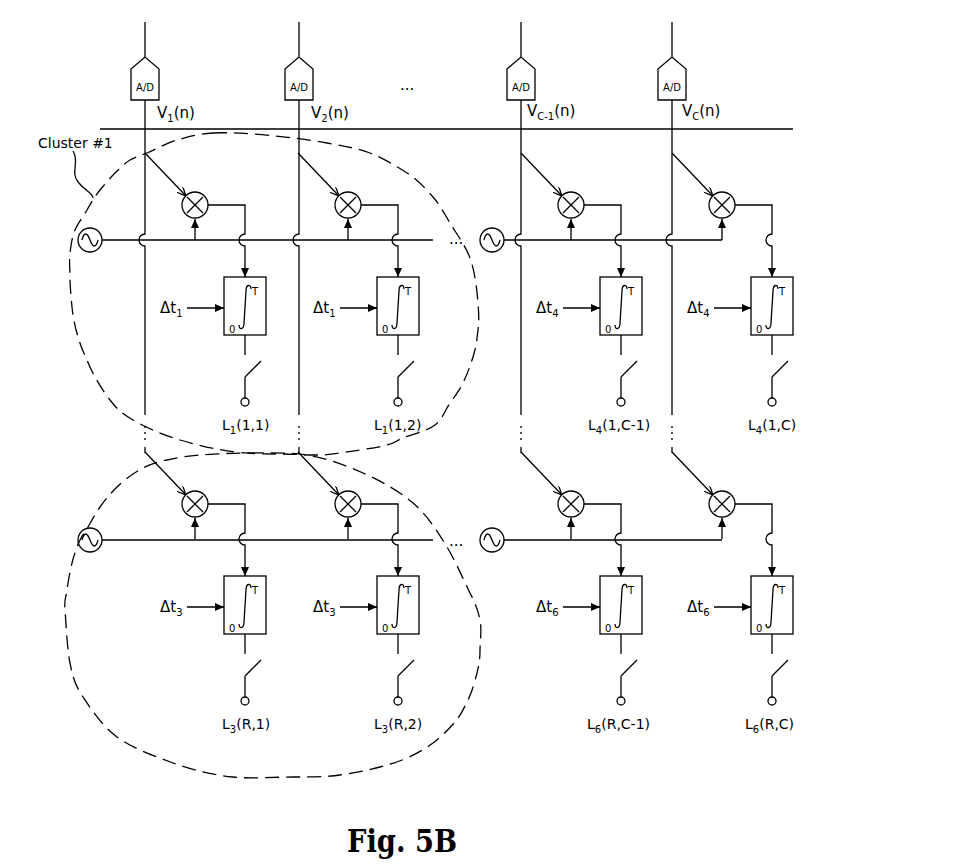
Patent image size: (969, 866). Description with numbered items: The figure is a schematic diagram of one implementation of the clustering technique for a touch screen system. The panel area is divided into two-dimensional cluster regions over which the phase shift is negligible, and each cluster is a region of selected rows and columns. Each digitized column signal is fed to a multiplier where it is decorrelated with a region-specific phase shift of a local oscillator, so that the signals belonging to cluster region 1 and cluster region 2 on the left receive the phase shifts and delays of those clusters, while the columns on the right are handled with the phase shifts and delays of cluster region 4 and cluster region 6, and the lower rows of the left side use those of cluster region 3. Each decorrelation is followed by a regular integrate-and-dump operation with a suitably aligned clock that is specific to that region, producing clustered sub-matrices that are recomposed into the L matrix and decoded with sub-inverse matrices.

The cluster region 1 is at (89, 254).
The cluster region 2 is at (92, 513).
The cluster region 3 is at (89, 554).
The cluster region 4 is at (491, 254).
The cluster region 6 is at (491, 554).